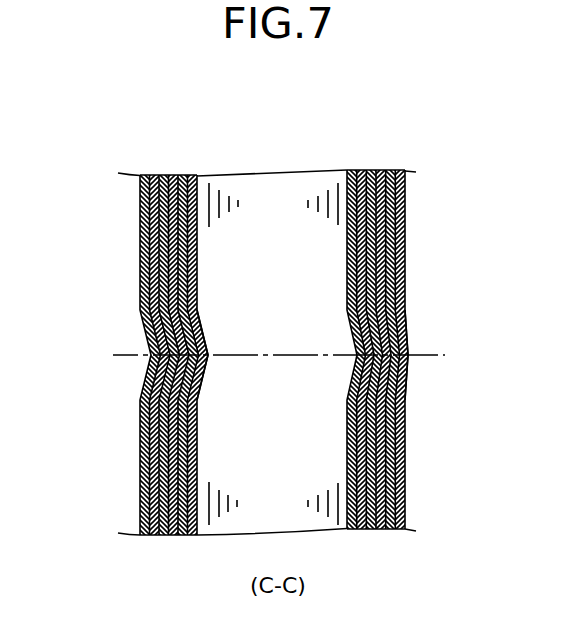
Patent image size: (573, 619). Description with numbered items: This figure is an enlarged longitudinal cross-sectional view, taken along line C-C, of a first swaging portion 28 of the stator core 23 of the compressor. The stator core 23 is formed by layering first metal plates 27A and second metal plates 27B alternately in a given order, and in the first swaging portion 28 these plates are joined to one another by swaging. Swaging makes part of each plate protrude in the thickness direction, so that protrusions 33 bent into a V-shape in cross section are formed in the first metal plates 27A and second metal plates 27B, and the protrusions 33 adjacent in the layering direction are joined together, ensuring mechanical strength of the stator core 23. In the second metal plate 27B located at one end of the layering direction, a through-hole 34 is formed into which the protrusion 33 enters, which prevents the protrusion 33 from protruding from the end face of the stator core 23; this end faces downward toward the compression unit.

The stator core 23 is at (79, 489).
The first metal plate 27A is at (356, 170).
The second metal plate 27B is at (366, 170).
The first swaging portion 28 is at (438, 306).
The protrusion 33 is at (208, 350).
The through-hole 34 is at (407, 388).